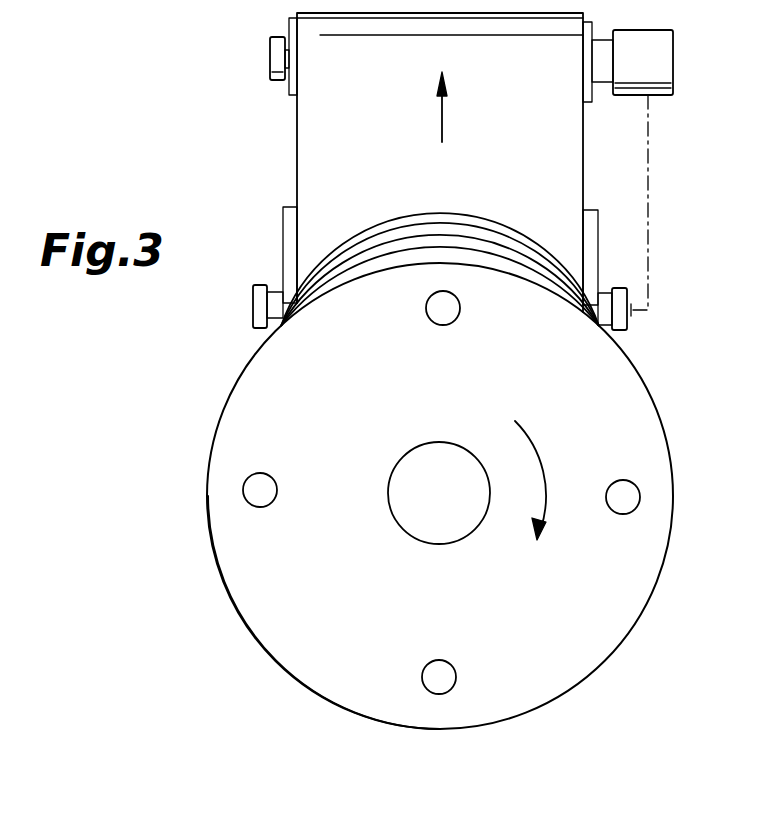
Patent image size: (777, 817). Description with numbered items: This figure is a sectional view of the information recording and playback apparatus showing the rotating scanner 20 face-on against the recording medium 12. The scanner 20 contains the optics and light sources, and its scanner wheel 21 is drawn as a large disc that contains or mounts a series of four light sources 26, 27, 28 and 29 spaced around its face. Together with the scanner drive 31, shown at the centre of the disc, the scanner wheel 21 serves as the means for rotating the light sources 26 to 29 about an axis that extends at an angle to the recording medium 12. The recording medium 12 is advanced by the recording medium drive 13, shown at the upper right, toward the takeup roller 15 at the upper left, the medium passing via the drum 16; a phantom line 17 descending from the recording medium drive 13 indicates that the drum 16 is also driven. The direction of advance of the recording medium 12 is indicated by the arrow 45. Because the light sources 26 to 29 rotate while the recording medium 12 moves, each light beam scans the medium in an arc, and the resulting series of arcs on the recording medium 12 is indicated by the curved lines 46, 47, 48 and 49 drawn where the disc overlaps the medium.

The recording medium 12 is at (305, 146).
The recording medium drive 13 is at (670, 53).
The takeup roller 15 is at (289, 30).
The drum 16 is at (283, 236).
The phantom line 17 is at (664, 170).
The scanner 20 is at (672, 398).
The scanner wheel 21 is at (248, 618).
The light source 26 is at (455, 320).
The light source 27 is at (272, 480).
The light source 28 is at (451, 664).
The light source 29 is at (621, 512).
The scanner drive 31 is at (408, 518).
The arrow 45 is at (443, 112).
The arc 46 is at (352, 236).
The arc 47 is at (399, 228).
The arc 48 is at (470, 232).
The arc 49 is at (520, 262).